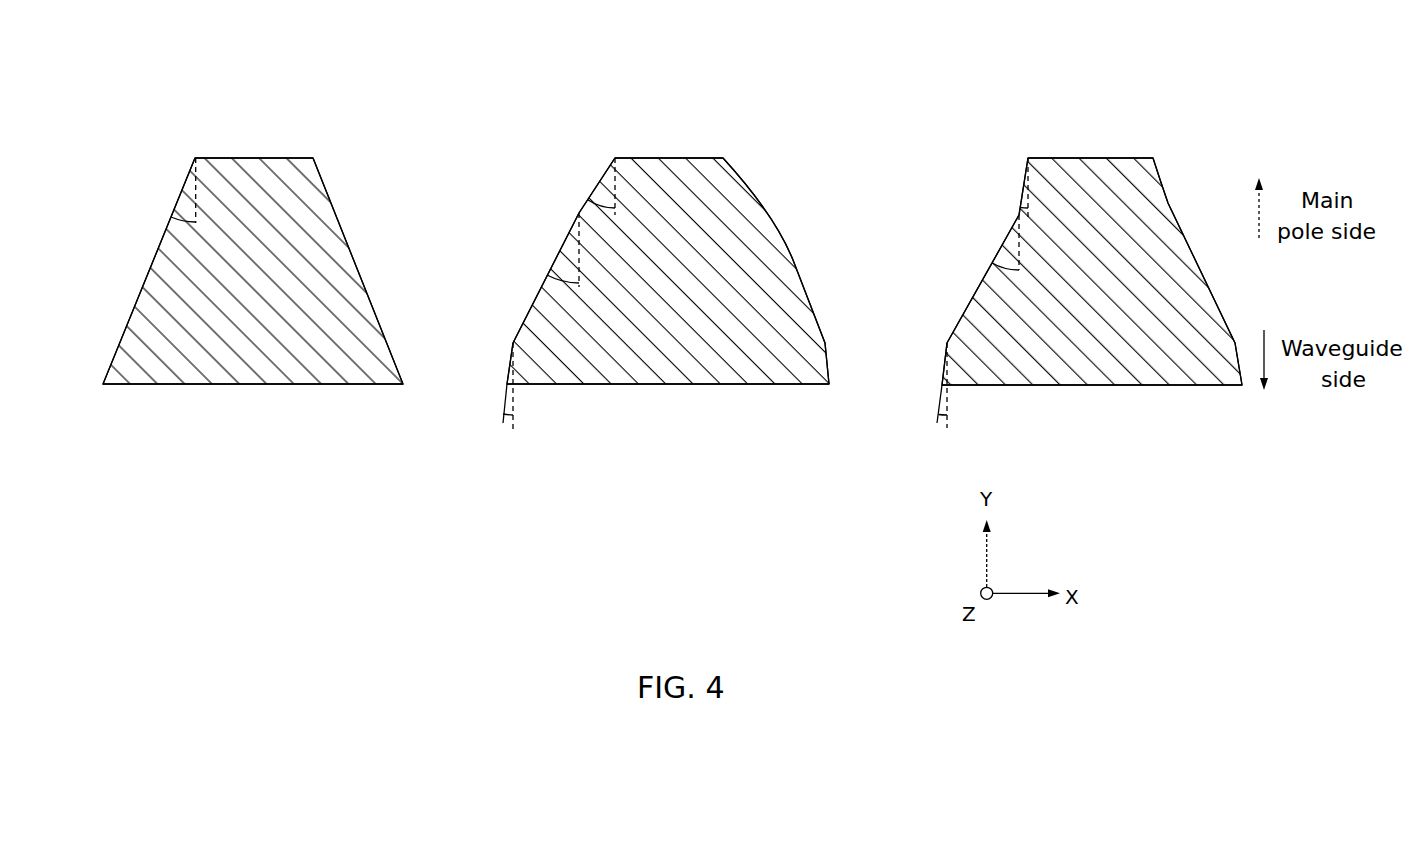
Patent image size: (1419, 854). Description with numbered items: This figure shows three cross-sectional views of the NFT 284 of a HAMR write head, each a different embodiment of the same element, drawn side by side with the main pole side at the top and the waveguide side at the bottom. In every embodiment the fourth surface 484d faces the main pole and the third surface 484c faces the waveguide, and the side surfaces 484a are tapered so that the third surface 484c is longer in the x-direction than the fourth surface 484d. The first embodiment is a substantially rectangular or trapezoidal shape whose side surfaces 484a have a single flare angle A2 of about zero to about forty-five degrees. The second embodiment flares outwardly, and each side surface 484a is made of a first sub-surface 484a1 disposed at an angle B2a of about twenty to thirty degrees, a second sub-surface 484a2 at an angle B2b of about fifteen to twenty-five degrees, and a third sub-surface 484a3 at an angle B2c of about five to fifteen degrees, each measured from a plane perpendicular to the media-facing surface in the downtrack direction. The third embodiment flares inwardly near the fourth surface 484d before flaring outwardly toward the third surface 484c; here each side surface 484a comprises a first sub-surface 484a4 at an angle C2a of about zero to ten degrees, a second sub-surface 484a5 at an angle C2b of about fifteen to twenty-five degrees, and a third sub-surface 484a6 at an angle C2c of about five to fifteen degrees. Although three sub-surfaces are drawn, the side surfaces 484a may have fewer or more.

The NFT 284 is at (1020, 93).
The side surface 484a is at (338, 222).
The third surface 484c is at (257, 384).
The fourth surface 484d is at (247, 158).
The first sub-surface 484a1 is at (597, 190).
The second sub-surface 484a2 is at (562, 255).
The third sub-surface 484a3 is at (512, 373).
The first sub-surface 484a4 is at (1021, 187).
The second sub-surface 484a5 is at (965, 307).
The third sub-surface 484a6 is at (942, 368).
The flare angle A2 is at (183, 222).
The angle B2a is at (617, 218).
The angle B2b is at (582, 283).
The angle B2c is at (508, 415).
The angle C2a is at (1034, 205).
The angle C2b is at (1018, 267).
The angle C2c is at (936, 415).